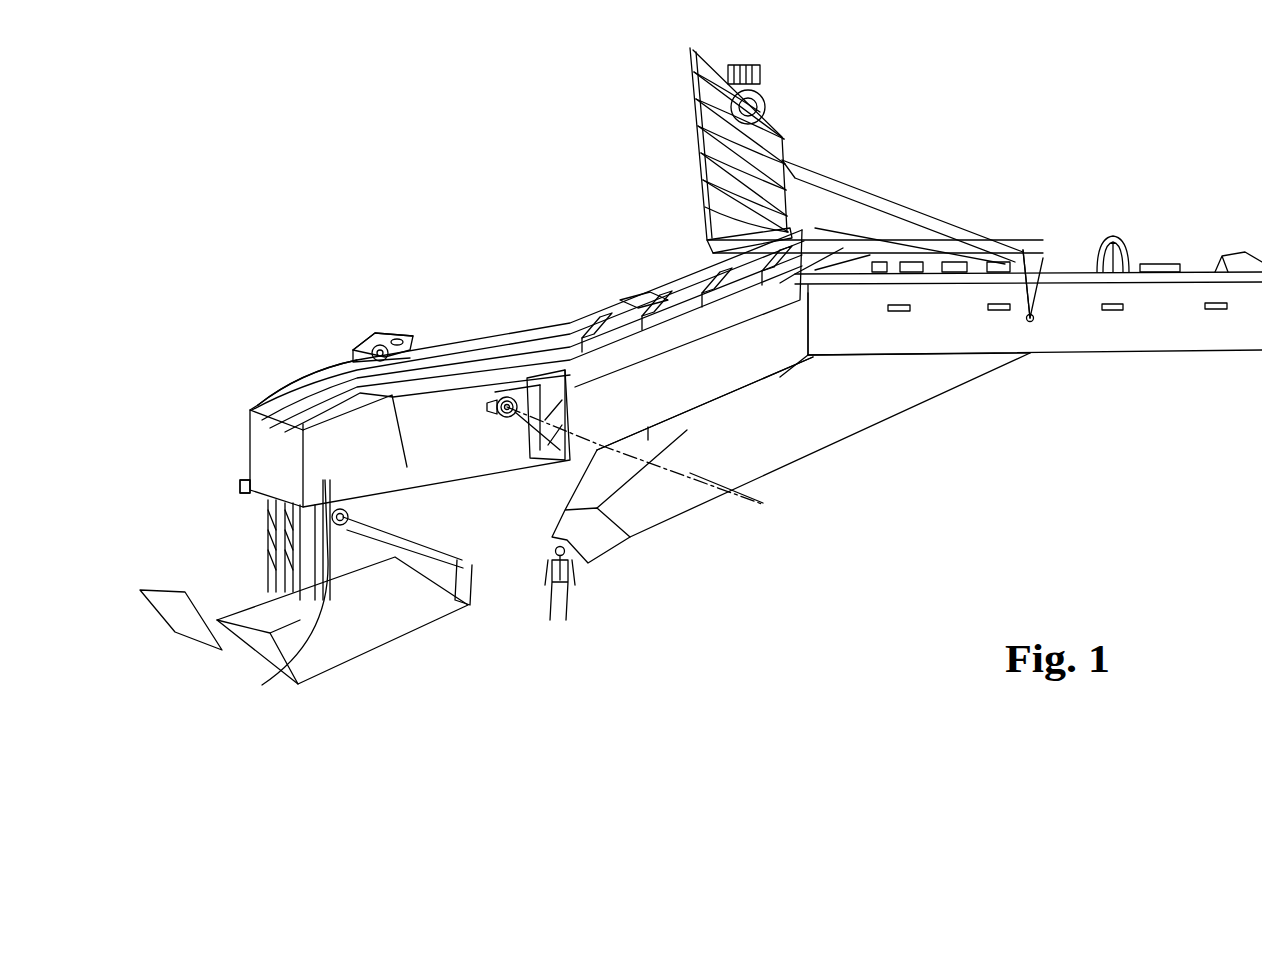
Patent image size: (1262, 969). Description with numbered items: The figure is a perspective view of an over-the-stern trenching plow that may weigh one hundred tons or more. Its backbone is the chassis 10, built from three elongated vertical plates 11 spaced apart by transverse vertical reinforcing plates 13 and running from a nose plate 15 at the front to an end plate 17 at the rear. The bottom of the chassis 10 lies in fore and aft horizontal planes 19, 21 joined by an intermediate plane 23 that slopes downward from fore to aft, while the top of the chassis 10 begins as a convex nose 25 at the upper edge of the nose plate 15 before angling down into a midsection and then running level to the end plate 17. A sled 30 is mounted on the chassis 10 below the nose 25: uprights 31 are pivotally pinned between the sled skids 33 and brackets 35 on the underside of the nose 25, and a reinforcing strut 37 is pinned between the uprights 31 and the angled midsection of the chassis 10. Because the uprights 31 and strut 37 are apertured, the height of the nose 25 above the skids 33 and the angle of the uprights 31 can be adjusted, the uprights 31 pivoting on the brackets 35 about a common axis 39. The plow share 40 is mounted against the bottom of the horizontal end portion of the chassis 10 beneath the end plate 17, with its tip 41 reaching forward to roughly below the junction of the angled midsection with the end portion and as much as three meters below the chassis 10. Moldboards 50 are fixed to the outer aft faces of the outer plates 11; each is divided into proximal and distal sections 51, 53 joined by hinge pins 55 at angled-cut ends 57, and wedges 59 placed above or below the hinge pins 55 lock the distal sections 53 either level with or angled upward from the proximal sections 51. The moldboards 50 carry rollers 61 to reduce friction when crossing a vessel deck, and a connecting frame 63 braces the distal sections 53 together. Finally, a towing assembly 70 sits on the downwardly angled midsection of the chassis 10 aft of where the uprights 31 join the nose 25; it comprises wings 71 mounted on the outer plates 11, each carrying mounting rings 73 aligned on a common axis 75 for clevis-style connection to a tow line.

The chassis 10 is at (527, 228).
The elongated vertical plates 11 is at (583, 367).
The transverse vertical reinforcing plates 13 is at (547, 363).
The nose plate 15 is at (260, 445).
The end plate 17 is at (835, 240).
The fore horizontal plane 19 is at (262, 685).
The aft horizontal plane 21 is at (743, 387).
The intermediate plane 23 is at (533, 455).
The convex nose 25 is at (283, 390).
The sled 30 is at (333, 697).
The uprights 31 is at (273, 563).
The sled skids 33 is at (183, 595).
The brackets 35 is at (243, 490).
The reinforcing strut 37 is at (420, 487).
The common axis 39 is at (457, 573).
The plow share 40 is at (885, 492).
The tip 41 is at (603, 543).
The moldboards 50 is at (1121, 440).
The proximal sections 51 is at (927, 347).
The distal sections 53 is at (1197, 345).
The hinge pins 55 is at (1032, 322).
The angled-cut ends 57 is at (1013, 315).
The wedges 59 is at (1030, 260).
The rollers 61 is at (760, 95).
The connecting frame 63 is at (938, 222).
The towing assembly 70 is at (420, 268).
The wings 71 is at (387, 333).
The mounting rings 73 is at (355, 338).
The common axis 75 is at (743, 493).